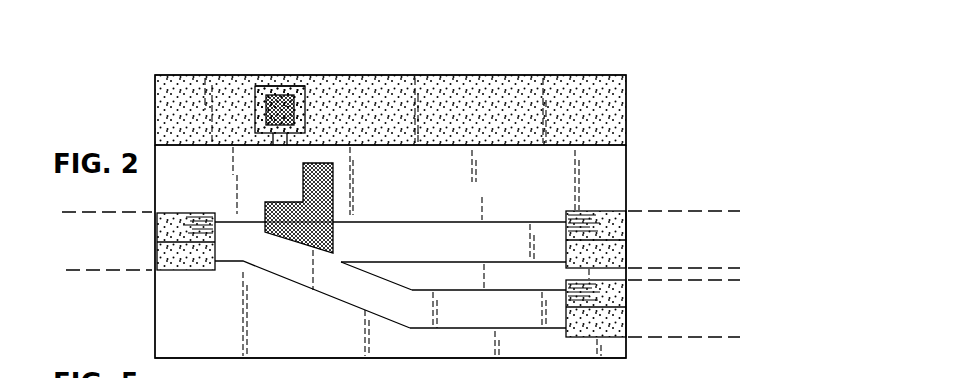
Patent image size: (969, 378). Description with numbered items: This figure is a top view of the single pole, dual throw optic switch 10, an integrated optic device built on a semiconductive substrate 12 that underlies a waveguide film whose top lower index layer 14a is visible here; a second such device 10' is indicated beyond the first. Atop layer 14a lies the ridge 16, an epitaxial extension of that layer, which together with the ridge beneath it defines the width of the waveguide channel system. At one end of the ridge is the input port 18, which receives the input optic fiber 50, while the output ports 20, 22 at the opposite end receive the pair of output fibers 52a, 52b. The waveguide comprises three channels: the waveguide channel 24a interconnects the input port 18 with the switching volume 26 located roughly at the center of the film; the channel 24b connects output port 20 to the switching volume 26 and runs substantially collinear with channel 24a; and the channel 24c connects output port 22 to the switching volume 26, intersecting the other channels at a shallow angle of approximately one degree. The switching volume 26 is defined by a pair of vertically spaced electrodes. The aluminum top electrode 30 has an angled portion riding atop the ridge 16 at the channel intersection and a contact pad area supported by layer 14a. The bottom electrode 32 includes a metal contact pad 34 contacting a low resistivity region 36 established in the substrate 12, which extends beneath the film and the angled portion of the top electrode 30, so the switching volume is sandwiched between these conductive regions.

The optic switch 10 is at (390, 193).
The second optical coupling device 10' is at (757, 372).
The substrate 12 is at (612, 105).
The lower index layer 14a is at (612, 179).
The ridge 16 is at (384, 301).
The input port 18 is at (150, 282).
The output port 20 is at (638, 205).
The output port 22 is at (629, 361).
The waveguide channel 24a is at (233, 212).
The waveguide channel 24b is at (432, 218).
The waveguide channel 24c is at (486, 338).
The switching volume 26 is at (272, 277).
The top electrode 30 is at (340, 204).
The bottom electrode 32 is at (316, 102).
The metal contact pad 34 is at (273, 98).
The low resistivity region 36 is at (288, 90).
The input optic fiber 50 is at (102, 257).
The output fiber 52a is at (697, 227).
The output fiber 52b is at (705, 320).